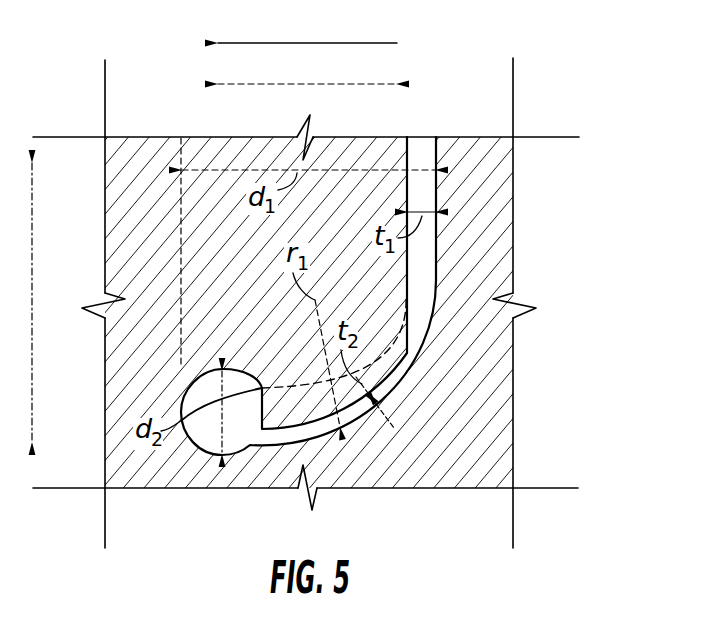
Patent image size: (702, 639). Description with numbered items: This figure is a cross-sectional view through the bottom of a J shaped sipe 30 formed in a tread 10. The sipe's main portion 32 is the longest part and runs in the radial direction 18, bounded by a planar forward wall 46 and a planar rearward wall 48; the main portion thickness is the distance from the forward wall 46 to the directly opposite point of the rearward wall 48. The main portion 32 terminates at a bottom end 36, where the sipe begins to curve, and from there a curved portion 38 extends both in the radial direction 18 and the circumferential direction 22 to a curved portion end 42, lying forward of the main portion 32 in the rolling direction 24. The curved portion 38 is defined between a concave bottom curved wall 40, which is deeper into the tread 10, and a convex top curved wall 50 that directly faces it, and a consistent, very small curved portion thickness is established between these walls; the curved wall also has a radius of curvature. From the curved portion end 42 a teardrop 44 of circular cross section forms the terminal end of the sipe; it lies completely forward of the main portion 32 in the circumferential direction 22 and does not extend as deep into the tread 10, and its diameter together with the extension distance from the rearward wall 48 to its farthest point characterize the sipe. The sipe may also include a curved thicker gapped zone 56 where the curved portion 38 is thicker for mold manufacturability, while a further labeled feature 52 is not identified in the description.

The tread 10 is at (543, 113).
The radial direction 18 is at (32, 302).
The circumferential direction 22 is at (307, 85).
The rolling direction 24 is at (307, 43).
The J shaped sipe 30 is at (436, 242).
The main portion 32 is at (436, 205).
The bottom end 36 is at (410, 352).
The curved portion 38 is at (307, 439).
The bottom curved wall 40 is at (397, 396).
The curved portion end 42 is at (262, 448).
The teardrop 44 is at (196, 443).
The forward wall 46 is at (406, 180).
The rearward wall 48 is at (436, 170).
The top curved wall 50 is at (396, 372).
The top surface 52 is at (121, 140).
The curved thicker gapped zone 56 is at (354, 421).